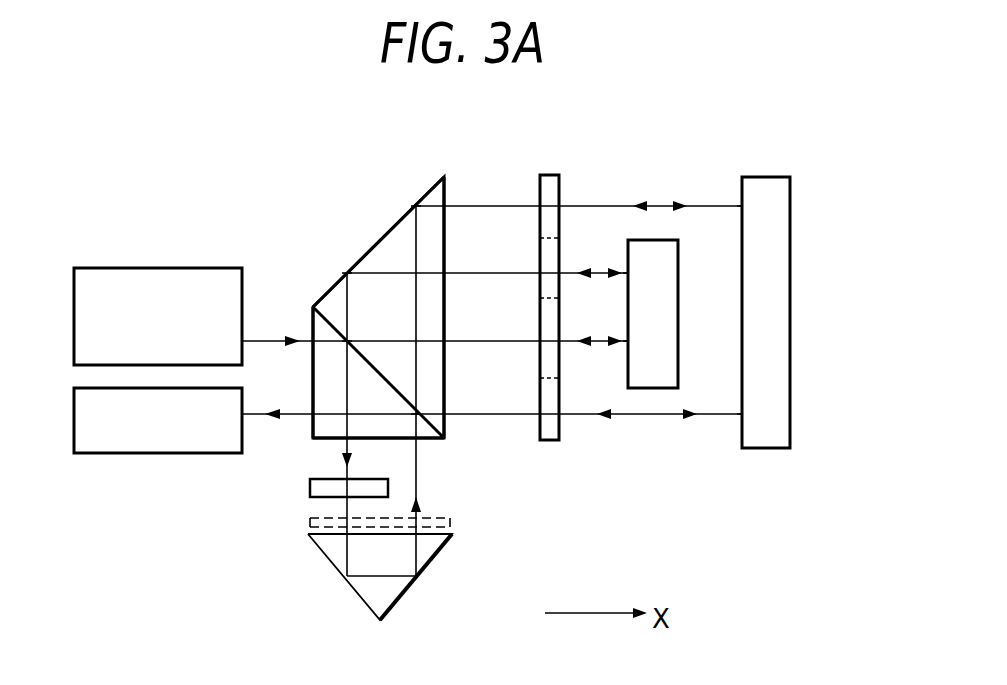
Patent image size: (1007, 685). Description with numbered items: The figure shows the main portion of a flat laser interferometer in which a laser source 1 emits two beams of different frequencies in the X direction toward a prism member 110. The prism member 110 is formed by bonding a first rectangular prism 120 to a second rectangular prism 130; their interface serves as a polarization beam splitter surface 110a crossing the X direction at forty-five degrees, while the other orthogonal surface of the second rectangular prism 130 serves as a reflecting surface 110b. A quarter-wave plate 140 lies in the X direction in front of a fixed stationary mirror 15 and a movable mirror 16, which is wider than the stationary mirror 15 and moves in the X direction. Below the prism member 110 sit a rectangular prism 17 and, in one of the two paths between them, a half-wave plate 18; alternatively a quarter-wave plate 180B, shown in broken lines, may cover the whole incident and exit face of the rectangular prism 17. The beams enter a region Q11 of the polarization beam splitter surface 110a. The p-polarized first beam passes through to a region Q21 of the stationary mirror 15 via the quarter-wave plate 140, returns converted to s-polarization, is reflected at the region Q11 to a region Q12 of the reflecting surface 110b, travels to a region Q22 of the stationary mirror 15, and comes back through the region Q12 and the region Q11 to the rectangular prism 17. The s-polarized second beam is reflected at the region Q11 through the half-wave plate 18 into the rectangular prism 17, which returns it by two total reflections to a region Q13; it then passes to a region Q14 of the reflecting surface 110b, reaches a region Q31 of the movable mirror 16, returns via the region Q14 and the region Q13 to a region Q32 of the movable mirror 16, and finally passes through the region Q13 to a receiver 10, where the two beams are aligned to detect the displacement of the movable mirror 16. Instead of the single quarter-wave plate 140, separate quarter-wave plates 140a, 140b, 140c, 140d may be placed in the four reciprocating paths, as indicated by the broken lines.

The laser source 1 is at (108, 268).
The receiver 10 is at (115, 453).
The prism member 110 is at (242, 180).
The polarization beam splitter surface 110a is at (427, 440).
The reflecting surface 110b is at (400, 220).
The first rectangular prism 120 is at (312, 432).
The second rectangular prism 130 is at (448, 190).
The region Q11 is at (338, 340).
The region Q12 is at (347, 272).
The region Q13 is at (420, 414).
The region Q14 is at (416, 204).
The λ/4 plate 140 is at (548, 175).
The λ/4 plate 140a is at (545, 328).
The λ/4 plate 140b is at (545, 262).
The λ/4 plate 140c is at (552, 205).
The λ/4 plate 140d is at (545, 398).
The stationary mirror 15 is at (678, 305).
The movable mirror 16 is at (780, 177).
The region Q21 is at (626, 345).
The region Q22 is at (628, 272).
The region Q31 is at (742, 206).
The region Q32 is at (741, 416).
The rectangular prism 17 is at (415, 586).
The λ/2 plate 18 is at (310, 490).
The λ/4 plate 180B is at (450, 527).